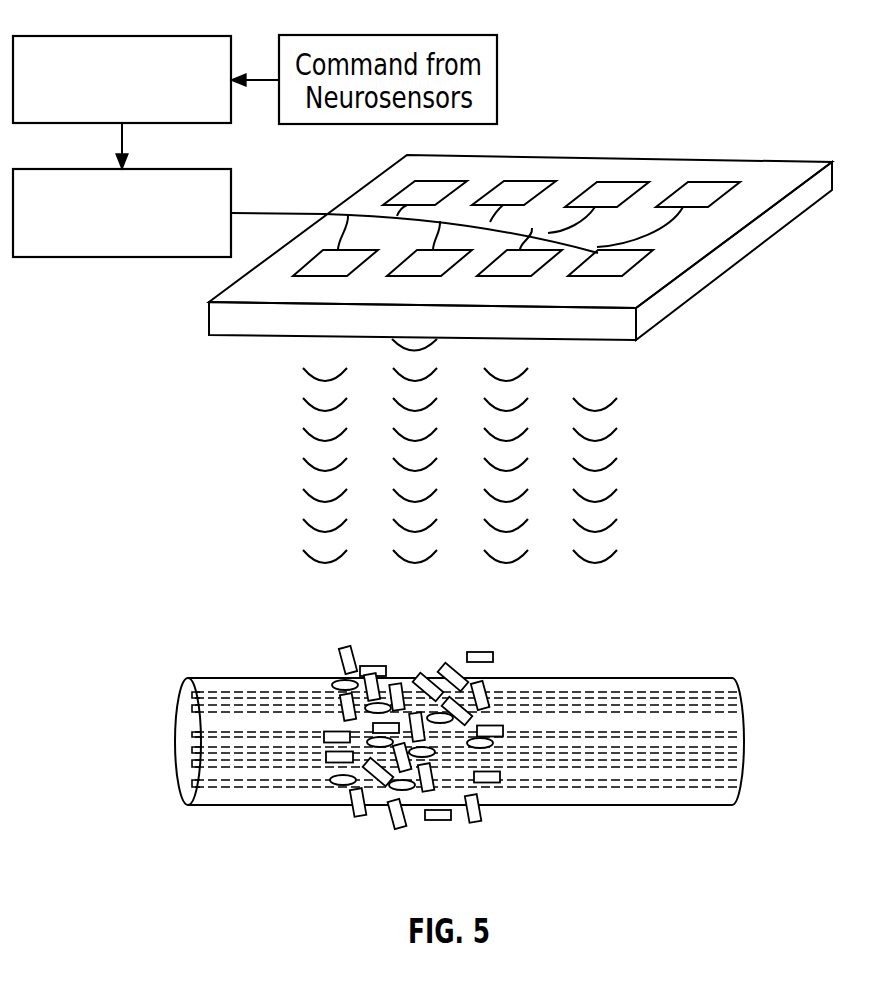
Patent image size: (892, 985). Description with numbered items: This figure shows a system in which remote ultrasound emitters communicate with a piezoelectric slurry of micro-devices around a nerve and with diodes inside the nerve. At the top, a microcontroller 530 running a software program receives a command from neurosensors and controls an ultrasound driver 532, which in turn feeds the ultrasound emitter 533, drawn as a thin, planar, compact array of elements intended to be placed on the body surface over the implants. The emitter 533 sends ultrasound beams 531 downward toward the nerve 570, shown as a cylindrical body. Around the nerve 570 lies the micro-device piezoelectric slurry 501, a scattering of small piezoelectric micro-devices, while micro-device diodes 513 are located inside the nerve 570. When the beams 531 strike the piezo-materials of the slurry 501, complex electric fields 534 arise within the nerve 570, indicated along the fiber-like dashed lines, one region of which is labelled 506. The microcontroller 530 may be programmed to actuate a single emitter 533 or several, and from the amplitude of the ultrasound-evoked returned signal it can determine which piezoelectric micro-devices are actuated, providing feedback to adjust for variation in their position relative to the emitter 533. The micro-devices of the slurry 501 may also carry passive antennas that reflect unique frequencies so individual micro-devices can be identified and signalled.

The microcontroller 530 is at (88, 36).
The ultrasound driver 532 is at (82, 169).
The ultrasound emitter 533 is at (658, 170).
The ultrasound beams 531 is at (307, 461).
The micro-device piezoelectric slurry 501 is at (503, 688).
The micro-device diodes 513 is at (343, 785).
The complex electric fields 534 is at (503, 752).
The nerve fiber bundle 506 is at (680, 740).
The nerve 570 is at (744, 722).